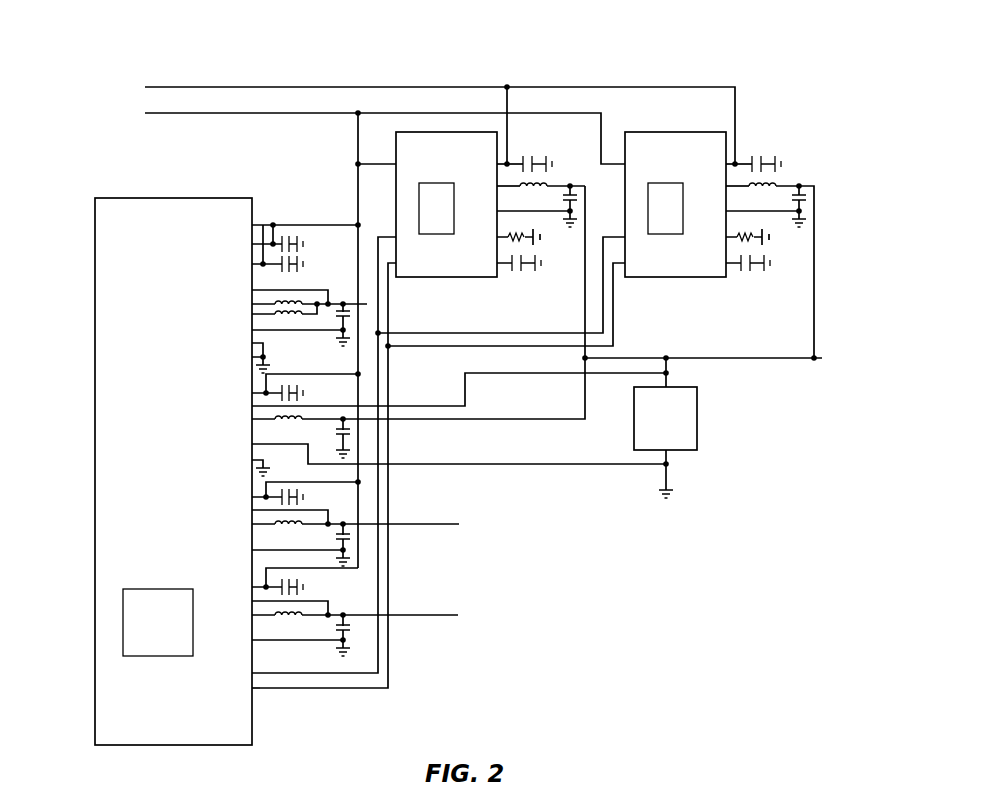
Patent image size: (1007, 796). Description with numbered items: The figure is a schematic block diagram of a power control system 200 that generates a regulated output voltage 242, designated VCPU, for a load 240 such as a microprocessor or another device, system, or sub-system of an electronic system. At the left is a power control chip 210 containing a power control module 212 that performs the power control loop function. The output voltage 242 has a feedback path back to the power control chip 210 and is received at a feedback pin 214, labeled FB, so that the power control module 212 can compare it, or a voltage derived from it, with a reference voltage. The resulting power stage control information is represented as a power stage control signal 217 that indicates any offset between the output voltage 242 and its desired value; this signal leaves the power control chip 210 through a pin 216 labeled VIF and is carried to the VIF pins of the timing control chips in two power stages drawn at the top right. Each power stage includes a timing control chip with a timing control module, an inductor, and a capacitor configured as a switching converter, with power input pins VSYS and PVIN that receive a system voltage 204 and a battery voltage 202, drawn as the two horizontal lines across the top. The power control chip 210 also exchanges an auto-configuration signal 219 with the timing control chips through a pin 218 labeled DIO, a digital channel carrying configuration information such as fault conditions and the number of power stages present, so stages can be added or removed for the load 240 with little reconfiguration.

The power control system 200 is at (553, 51).
The battery voltage 202 is at (648, 87).
The system voltage 204 is at (276, 114).
The power control chip 210 is at (95, 437).
The power control module 212 is at (158, 622).
The feedback pin 214 is at (228, 407).
The VIF pin 216 is at (228, 673).
The power stage control signal 217 is at (286, 676).
The DIO pin 218 is at (228, 689).
The auto-configuration signal 219 is at (340, 690).
The load 240 is at (697, 422).
The output voltage 242 is at (770, 360).